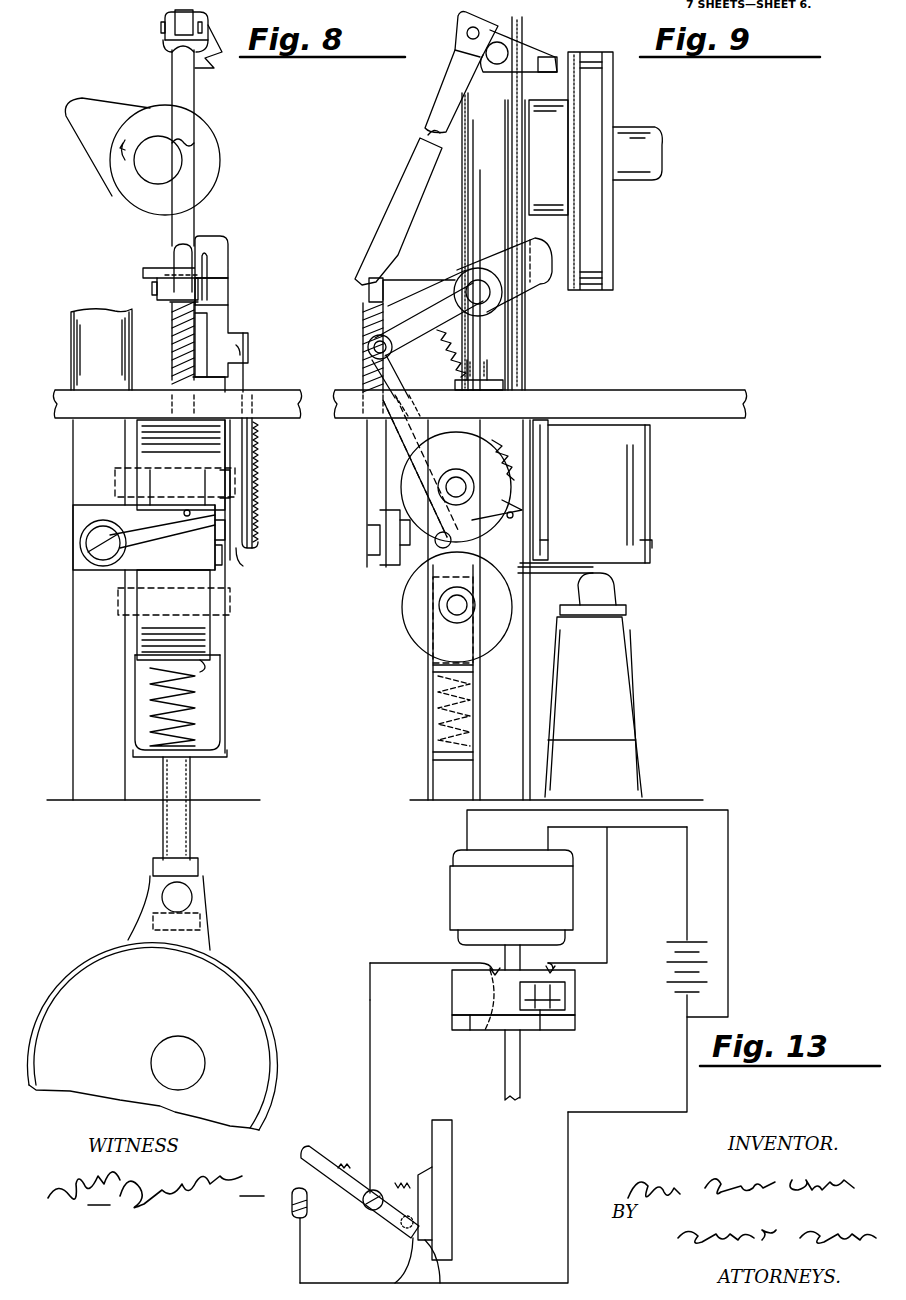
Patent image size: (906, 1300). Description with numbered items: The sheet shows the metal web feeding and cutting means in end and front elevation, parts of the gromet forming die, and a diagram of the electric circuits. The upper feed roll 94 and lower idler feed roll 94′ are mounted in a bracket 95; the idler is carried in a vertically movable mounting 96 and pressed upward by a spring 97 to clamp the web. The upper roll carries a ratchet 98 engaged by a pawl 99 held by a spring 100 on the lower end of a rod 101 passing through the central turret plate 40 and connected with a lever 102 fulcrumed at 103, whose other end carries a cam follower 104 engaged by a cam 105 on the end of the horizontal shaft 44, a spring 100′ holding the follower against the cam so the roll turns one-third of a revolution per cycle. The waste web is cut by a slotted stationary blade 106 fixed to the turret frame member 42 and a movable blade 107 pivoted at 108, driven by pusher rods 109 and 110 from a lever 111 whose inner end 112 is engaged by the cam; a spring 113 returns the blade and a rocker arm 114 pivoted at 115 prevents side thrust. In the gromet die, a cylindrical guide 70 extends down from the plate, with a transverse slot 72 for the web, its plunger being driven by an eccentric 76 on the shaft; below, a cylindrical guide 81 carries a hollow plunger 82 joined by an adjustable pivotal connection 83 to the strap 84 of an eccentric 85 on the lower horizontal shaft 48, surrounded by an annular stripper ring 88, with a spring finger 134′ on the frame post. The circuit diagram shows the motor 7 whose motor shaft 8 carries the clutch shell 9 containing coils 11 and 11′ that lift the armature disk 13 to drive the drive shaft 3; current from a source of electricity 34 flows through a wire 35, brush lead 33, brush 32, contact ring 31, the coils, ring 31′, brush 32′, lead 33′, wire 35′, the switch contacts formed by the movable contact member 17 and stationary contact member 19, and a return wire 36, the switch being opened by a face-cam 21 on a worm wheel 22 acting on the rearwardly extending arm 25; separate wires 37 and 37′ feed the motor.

In FIG. 13, the drive shaft 3 is at (526, 1065).
In FIG. 13, the motor 7 is at (511, 905).
In FIG. 13, the motor shaft 8 is at (515, 955).
In FIG. 13, the hollow cylindrical shell 9 is at (513, 992).
In FIG. 13, the outer electro-magnet coil 11 is at (563, 996).
In FIG. 13, the inner electro-magnet coil 11′ is at (538, 1038).
In FIG. 13, the armature disk 13 is at (520, 1038).
In FIG. 13, the movable contact member 17 is at (360, 1182).
In FIG. 13, the stationary contact member 19 is at (283, 1216).
In FIG. 13, the face-cam 21 is at (445, 1263).
In FIG. 13, the worm wheel 22 is at (450, 1190).
In FIG. 13, the rearwardly extending arm 25 is at (375, 1262).
In FIG. 13, the contact ring 31 is at (455, 999).
In FIG. 13, the contact ring 31′ is at (474, 1037).
In FIG. 13, the brush 32 is at (572, 951).
In FIG. 13, the brush 32′ is at (462, 962).
In FIG. 13, the brush lead 33 is at (617, 895).
In FIG. 13, the lead 33′ is at (390, 982).
In FIG. 13, the source of electricity 34 is at (670, 972).
In FIG. 13, the wire 35 is at (700, 883).
In FIG. 13, the wire 35′ is at (348, 1096).
In FIG. 13, the return wire 36 is at (434, 1197).
In FIG. 13, the wire 37 is at (520, 846).
In FIG. 13, the wire 37′ is at (616, 906).
In FIG. 8, the central turret plate 40 is at (182, 395).
In FIG. 9, the central turret plate 40 is at (539, 395).
In FIG. 8, the turret frame member 42 is at (83, 554).
In FIG. 9, the turret frame member 42 is at (509, 408).
In FIG. 8, the horizontal shaft 44 is at (137, 179).
In FIG. 9, the horizontal shaft 44 is at (659, 153).
In FIG. 8, the horizontal shaft 48 is at (176, 1048).
In FIG. 9, the cylindrical guide 70 is at (602, 494).
In FIG. 9, the transverse slot 72 is at (665, 533).
In FIG. 9, the eccentric 76 is at (606, 171).
In FIG. 9, the cylindrical guide 81 is at (556, 708).
In FIG. 8, the plunger 82 is at (199, 808).
In FIG. 9, the plunger 82 is at (622, 590).
In FIG. 8, the adjustable pivotal connection 83 is at (185, 904).
In FIG. 8, the strap 84 is at (152, 1036).
In FIG. 8, the eccentric 85 is at (153, 918).
In FIG. 9, the annular stripper ring 88 is at (620, 620).
In FIG. 8, the feed roll 94 is at (137, 481).
In FIG. 9, the feed roll 94 is at (418, 469).
In FIG. 8, the feed roll 94′ is at (136, 615).
In FIG. 9, the feed roll 94′ is at (439, 676).
In FIG. 8, the bracket 95 is at (199, 706).
In FIG. 9, the bracket 95 is at (428, 766).
In FIG. 8, the mounting 96 is at (199, 651).
In FIG. 9, the mounting 96 is at (428, 681).
In FIG. 8, the spring 97 is at (207, 707).
In FIG. 9, the spring 97 is at (428, 711).
In FIG. 8, the ratchet 98 is at (250, 568).
In FIG. 9, the ratchet 98 is at (421, 482).
In FIG. 8, the pawl 99 is at (268, 549).
In FIG. 9, the pawl 99 is at (408, 567).
In FIG. 8, the spring 100 is at (268, 483).
In FIG. 9, the spring 100 is at (560, 490).
In FIG. 9, the spring 100′ is at (515, 356).
In FIG. 8, the rod 101 is at (239, 377).
In FIG. 9, the rod 101 is at (466, 399).
In FIG. 8, the lever 102 is at (235, 348).
In FIG. 9, the lever 102 is at (401, 366).
In FIG. 8, the fulcrum 103 is at (235, 291).
In FIG. 9, the fulcrum 103 is at (438, 312).
In FIG. 8, the cam follower 104 is at (164, 270).
In FIG. 9, the cam follower 104 is at (510, 269).
In FIG. 8, the cam 105 is at (129, 156).
In FIG. 9, the cam 105 is at (548, 157).
In FIG. 8, the slotted stationary blade 106 is at (188, 537).
In FIG. 9, the slotted stationary blade 106 is at (371, 555).
In FIG. 8, the movable blade 107 is at (133, 520).
In FIG. 9, the movable blade 107 is at (349, 540).
In FIG. 8, the pivot 108 is at (78, 543).
In FIG. 9, the pivot 108 is at (349, 544).
In FIG. 8, the pusher rod 109 is at (153, 586).
In FIG. 9, the pusher rod 109 is at (373, 610).
In FIG. 8, the pusher rod 110 is at (204, 171).
In FIG. 9, the pusher rod 110 is at (393, 216).
In FIG. 8, the lever 111 is at (204, 31).
In FIG. 9, the lever 111 is at (470, 66).
In FIG. 8, the inner end 112 is at (219, 53).
In FIG. 9, the inner end 112 is at (535, 50).
In FIG. 8, the spring 113 is at (165, 343).
In FIG. 9, the spring 113 is at (350, 348).
In FIG. 8, the rocker arm 114 is at (165, 313).
In FIG. 9, the rocker arm 114 is at (424, 274).
In FIG. 8, the pivot 115 is at (146, 290).
In FIG. 9, the spring finger 134′ is at (555, 584).